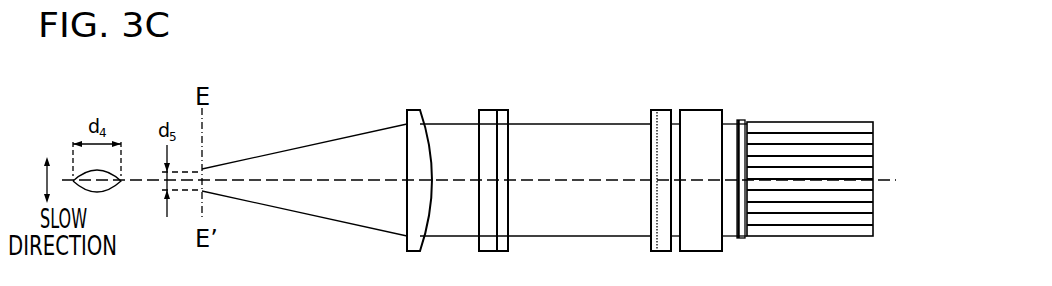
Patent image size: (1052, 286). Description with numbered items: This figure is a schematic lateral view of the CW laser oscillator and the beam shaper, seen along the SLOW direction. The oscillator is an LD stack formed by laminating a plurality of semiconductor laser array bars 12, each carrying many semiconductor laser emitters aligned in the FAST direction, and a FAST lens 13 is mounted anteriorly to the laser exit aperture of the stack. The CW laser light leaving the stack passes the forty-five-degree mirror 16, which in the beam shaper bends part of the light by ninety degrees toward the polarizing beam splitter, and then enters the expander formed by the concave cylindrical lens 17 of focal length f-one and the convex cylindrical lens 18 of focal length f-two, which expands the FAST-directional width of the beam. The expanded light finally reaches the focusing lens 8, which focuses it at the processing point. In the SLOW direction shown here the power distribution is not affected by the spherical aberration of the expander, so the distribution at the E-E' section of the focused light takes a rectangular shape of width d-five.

The focusing lens 8 is at (413, 115).
The semiconductor laser array bar 12 is at (803, 128).
The FAST lens 13 is at (740, 118).
The 45-degree mirror 16 is at (690, 115).
The concave cylindrical lens 17 is at (661, 115).
The convex cylindrical lens 18 is at (490, 117).